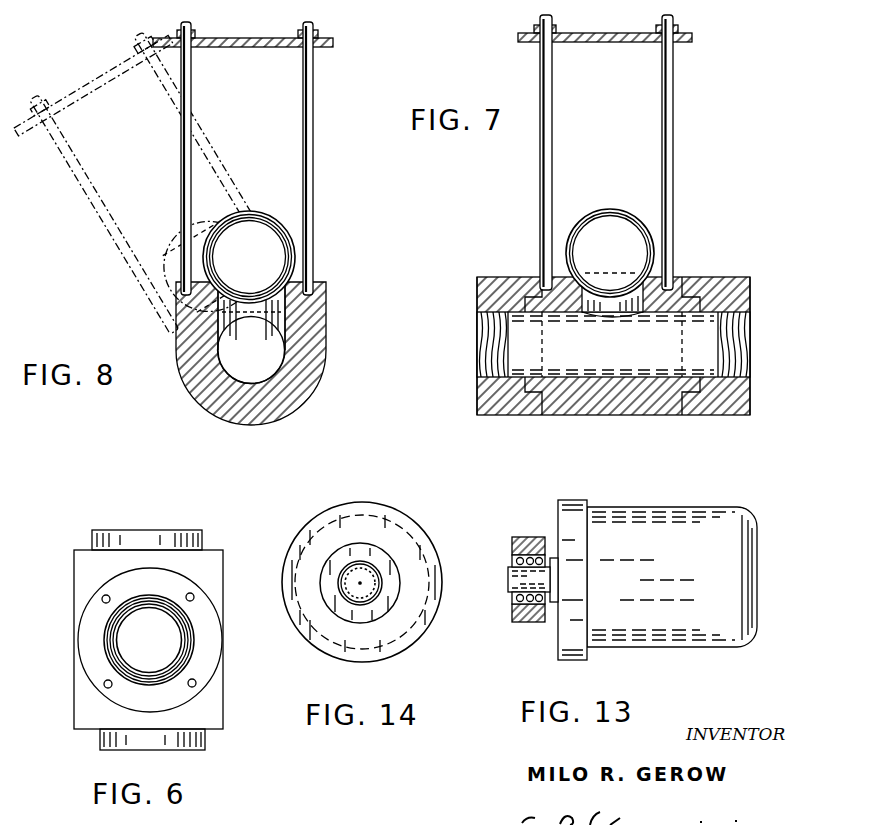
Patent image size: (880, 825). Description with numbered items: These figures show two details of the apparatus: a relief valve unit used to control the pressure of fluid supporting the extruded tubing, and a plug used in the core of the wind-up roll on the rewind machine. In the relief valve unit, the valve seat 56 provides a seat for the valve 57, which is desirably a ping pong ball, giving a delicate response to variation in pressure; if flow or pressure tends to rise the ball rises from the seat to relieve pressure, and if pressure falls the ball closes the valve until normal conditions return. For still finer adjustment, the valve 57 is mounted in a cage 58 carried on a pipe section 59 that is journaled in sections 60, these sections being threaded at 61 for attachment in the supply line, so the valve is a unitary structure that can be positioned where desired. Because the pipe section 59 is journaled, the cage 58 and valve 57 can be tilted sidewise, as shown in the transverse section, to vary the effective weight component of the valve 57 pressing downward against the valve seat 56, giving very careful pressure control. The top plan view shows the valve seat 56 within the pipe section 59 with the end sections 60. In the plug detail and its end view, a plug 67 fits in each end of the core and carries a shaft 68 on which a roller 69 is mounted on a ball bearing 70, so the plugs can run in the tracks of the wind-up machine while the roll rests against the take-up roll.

In FIG. 8, the valve seat 56 is at (300, 292).
In FIG. 7, the valve seat 56 is at (645, 288).
In FIG. 6, the valve seat 56 is at (107, 643).
In FIG. 8, the valve 57 is at (274, 229).
In FIG. 7, the valve 57 is at (628, 222).
In FIG. 8, the cage 58 is at (312, 138).
In FIG. 7, the cage 58 is at (675, 136).
In FIG. 8, the pipe section 59 is at (301, 430).
In FIG. 7, the pipe section 59 is at (601, 409).
In FIG. 6, the pipe section 59 is at (212, 648).
In FIG. 7, the sections 60 is at (497, 410).
In FIG. 6, the sections 60 is at (200, 535).
In FIG. 7, the threads 61 is at (478, 322).
In FIG. 14, the plug 67 is at (412, 634).
In FIG. 13, the plug 67 is at (703, 641).
In FIG. 14, the shaft 68 is at (360, 585).
In FIG. 13, the shaft 68 is at (513, 580).
In FIG. 14, the roller 69 is at (385, 562).
In FIG. 13, the roller 69 is at (536, 520).
In FIG. 14, the ball bearing 70 is at (385, 578).
In FIG. 13, the ball bearing 70 is at (525, 621).